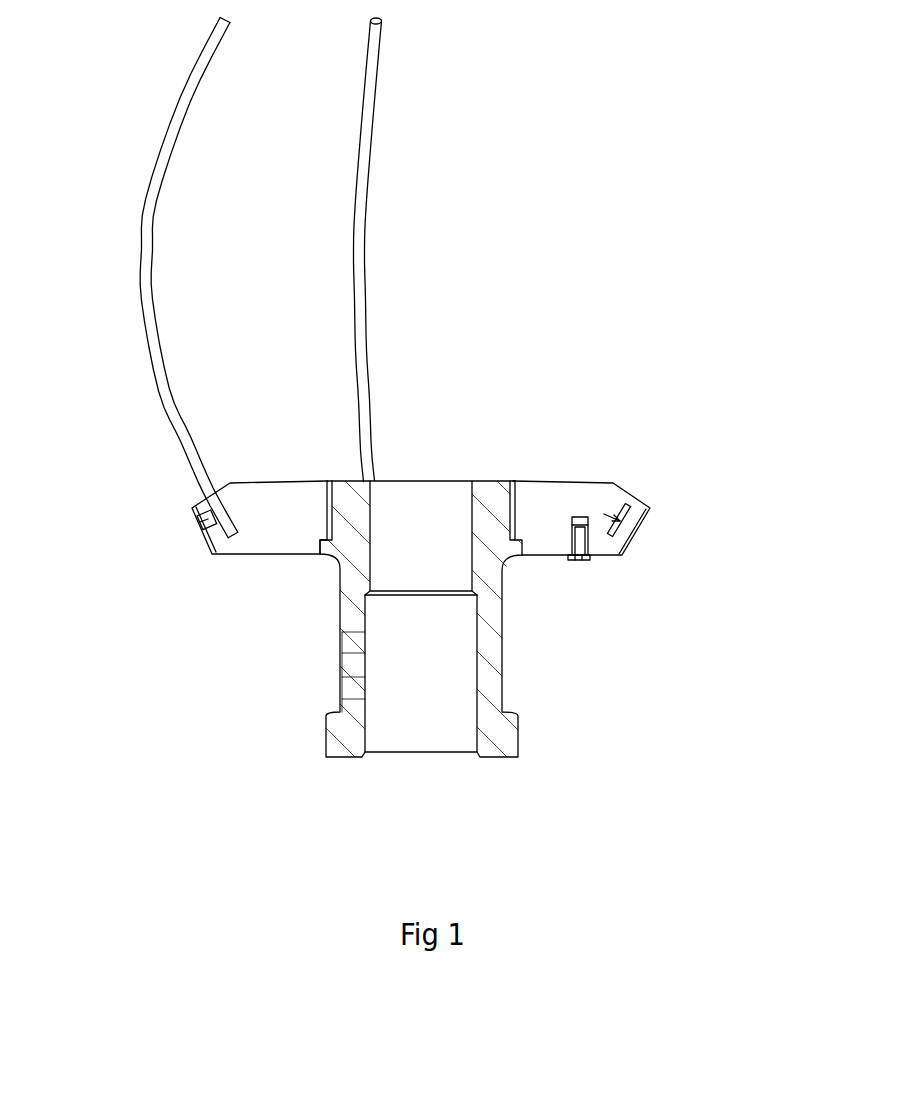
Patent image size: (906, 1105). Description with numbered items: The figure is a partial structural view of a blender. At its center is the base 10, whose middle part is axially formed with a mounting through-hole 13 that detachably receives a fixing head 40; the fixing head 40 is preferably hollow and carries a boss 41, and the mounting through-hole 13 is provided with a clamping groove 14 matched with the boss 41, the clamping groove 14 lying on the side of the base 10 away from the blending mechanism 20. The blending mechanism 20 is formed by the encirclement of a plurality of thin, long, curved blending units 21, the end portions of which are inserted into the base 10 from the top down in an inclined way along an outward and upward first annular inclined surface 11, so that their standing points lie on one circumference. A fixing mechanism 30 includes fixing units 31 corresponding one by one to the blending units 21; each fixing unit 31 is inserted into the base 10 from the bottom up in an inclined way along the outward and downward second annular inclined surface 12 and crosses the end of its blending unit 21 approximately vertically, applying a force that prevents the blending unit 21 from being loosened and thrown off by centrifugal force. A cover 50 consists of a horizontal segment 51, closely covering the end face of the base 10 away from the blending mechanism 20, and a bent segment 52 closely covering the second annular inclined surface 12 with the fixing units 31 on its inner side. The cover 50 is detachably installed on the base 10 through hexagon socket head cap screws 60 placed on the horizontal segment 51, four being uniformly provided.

The base 10 is at (545, 498).
The first annular inclined surface 11 is at (650, 507).
The second annular inclined surface 12 is at (648, 510).
The mounting through-hole 13 is at (513, 481).
The clamping groove 14 is at (320, 554).
The blending mechanism 20 is at (372, 160).
The blending unit 21 is at (360, 350).
The fixing mechanism 30 is at (236, 514).
The fixing unit 31 is at (197, 532).
The fixing head 40 is at (485, 497).
The boss 41 is at (513, 548).
The cover 50 is at (232, 553).
The horizontal segment 51 is at (615, 555).
The bent segment 52 is at (643, 528).
The hexagon socket head cap screw 60 is at (588, 560).